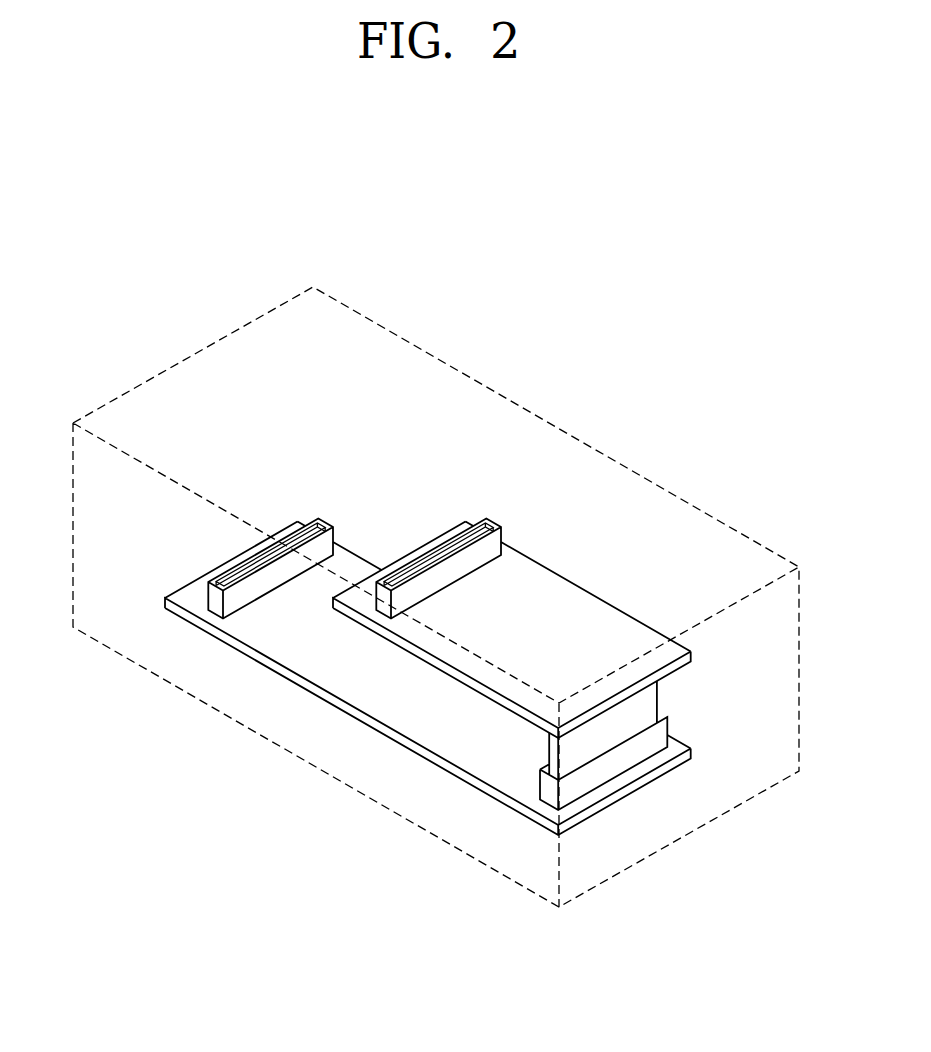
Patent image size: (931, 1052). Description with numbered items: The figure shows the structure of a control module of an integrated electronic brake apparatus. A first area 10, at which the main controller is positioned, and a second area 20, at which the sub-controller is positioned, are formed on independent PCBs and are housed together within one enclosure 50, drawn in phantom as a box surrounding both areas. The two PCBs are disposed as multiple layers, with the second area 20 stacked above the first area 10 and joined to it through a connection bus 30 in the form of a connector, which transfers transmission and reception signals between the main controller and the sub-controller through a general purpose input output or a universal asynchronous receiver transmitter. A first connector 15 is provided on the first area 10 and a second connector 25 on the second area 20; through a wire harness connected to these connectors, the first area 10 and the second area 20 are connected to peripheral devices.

The first area 10 is at (380, 698).
The first connector 15 is at (300, 540).
The second area 20 is at (552, 597).
The second connector 25 is at (453, 547).
The connection bus 30 is at (578, 743).
The enclosure 50 is at (710, 513).